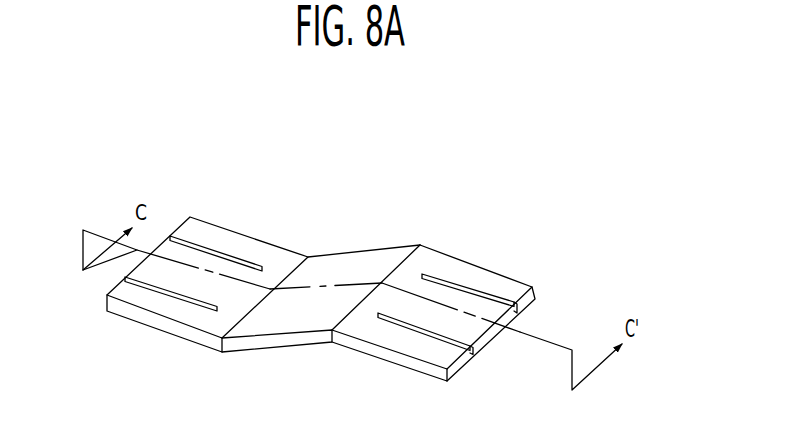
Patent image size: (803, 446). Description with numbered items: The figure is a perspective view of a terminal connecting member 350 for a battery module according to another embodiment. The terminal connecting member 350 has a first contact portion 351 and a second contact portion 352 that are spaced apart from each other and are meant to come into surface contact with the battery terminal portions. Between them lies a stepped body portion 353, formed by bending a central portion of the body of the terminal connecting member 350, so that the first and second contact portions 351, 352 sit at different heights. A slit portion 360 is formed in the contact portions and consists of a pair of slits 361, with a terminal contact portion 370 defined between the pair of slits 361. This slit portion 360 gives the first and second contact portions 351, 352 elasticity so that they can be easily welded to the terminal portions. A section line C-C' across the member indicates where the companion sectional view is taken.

The terminal connecting member 350 is at (401, 156).
The first contact portion 351 is at (149, 338).
The second contact portion 352 is at (392, 368).
The stepped body portion 353 is at (300, 322).
The slit portion 360 is at (570, 218).
The slits 361 is at (415, 328).
The terminal contact portion 370 is at (472, 332).